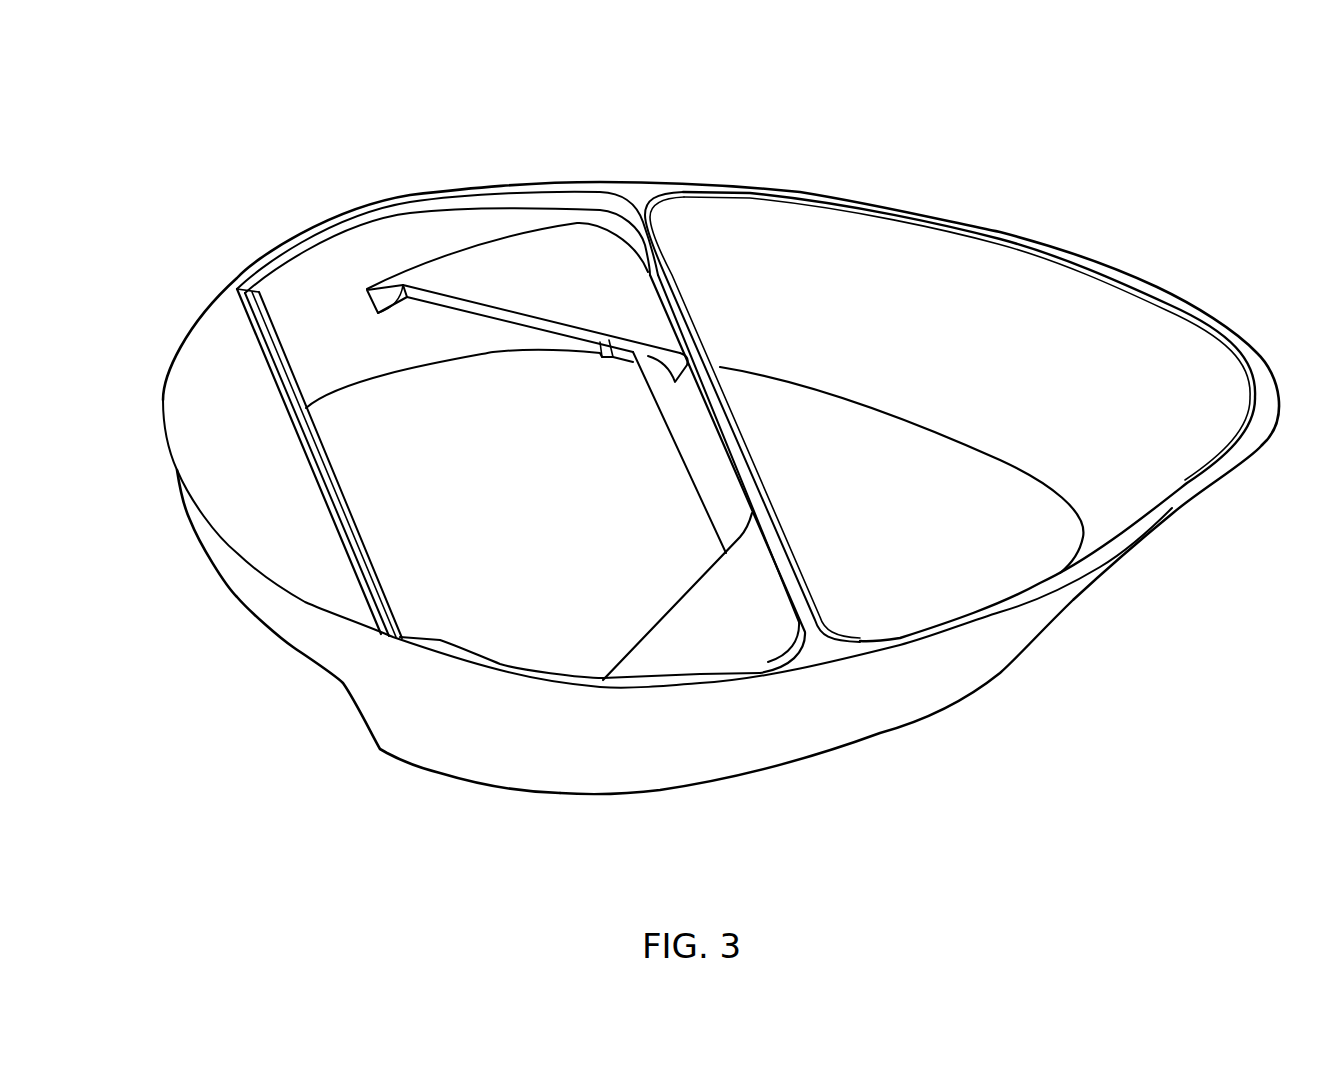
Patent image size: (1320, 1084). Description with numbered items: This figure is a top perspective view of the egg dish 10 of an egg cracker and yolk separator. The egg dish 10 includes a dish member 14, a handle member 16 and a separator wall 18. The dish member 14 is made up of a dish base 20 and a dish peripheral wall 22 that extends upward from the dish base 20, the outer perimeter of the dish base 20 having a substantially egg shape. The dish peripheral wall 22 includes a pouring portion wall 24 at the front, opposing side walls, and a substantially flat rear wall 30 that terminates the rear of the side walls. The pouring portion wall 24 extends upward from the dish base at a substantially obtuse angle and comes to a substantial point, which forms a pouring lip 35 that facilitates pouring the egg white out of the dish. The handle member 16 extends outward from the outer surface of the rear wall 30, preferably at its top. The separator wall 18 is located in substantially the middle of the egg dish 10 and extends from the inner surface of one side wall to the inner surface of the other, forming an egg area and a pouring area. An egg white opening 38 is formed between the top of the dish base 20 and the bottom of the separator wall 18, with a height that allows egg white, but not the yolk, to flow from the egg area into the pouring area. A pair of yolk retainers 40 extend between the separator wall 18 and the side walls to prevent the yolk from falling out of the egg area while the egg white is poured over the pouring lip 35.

The egg dish 10 is at (958, 135).
The dish member 14 is at (1030, 240).
The handle member 16 is at (230, 565).
The separator wall 18 is at (667, 270).
The dish base 20 is at (947, 582).
The dish peripheral wall 22 is at (1165, 290).
The pouring portion wall 24 is at (1215, 415).
The substantially flat rear wall 30 is at (333, 500).
The pouring lip 35 is at (1158, 467).
The egg white opening 38 is at (690, 520).
The yolk retainers 40 is at (522, 267).